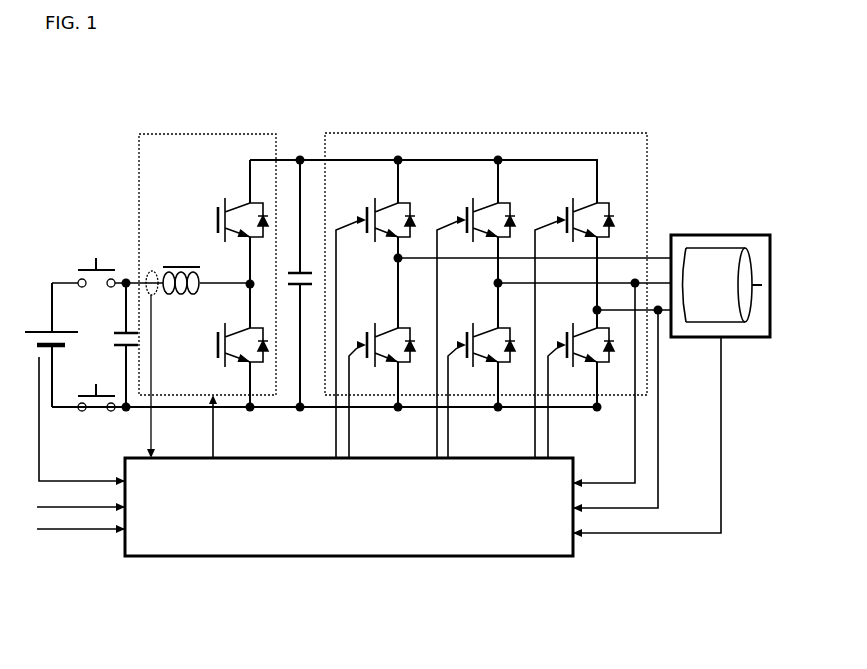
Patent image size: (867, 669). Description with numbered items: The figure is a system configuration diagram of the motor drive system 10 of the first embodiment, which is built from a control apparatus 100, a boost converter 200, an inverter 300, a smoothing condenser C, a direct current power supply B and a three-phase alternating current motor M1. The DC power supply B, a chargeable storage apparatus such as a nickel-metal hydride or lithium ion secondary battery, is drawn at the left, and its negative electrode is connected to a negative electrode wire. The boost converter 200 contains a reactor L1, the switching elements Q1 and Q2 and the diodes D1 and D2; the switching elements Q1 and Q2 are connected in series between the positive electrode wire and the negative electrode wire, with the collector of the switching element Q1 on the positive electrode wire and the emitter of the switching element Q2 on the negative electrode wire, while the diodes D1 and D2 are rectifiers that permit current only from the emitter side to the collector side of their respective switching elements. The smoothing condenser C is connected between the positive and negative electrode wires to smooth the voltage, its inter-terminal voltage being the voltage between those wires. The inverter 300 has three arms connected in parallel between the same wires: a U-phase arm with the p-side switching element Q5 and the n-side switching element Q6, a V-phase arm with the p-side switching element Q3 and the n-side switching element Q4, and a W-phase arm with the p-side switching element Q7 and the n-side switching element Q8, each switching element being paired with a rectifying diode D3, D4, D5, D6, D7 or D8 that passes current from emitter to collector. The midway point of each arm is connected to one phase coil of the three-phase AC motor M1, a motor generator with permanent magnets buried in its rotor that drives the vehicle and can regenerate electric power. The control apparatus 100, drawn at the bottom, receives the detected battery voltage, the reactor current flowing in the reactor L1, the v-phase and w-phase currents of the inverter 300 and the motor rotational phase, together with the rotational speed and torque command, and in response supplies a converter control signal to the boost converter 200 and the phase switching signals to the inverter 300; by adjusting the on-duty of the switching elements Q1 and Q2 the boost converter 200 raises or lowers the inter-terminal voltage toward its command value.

The motor drive system 10 is at (78, 80).
The control apparatus 100 is at (147, 556).
The boost converter 200 is at (207, 256).
The inverter 300 is at (486, 256).
The direct current power supply B is at (51, 345).
The reactor L1 is at (173, 272).
The smoothing condenser C is at (306, 283).
The three-phase AC motor M1 is at (720, 276).
The switching element Q1 is at (230, 212).
The switching element Q2 is at (230, 337).
The p-side switching element Q3 is at (376, 212).
The n-side switching element Q4 is at (376, 337).
The p-side switching element Q5 is at (476, 212).
The n-side switching element Q6 is at (476, 337).
The p-side switching element Q7 is at (576, 212).
The n-side switching element Q8 is at (576, 337).
The diode D1 is at (263, 212).
The diode D2 is at (263, 337).
The rectifying diode D3 is at (411, 212).
The rectifying diode D4 is at (411, 337).
The rectifying diode D5 is at (511, 212).
The rectifying diode D6 is at (511, 337).
The rectifying diode D7 is at (610, 212).
The rectifying diode D8 is at (610, 358).